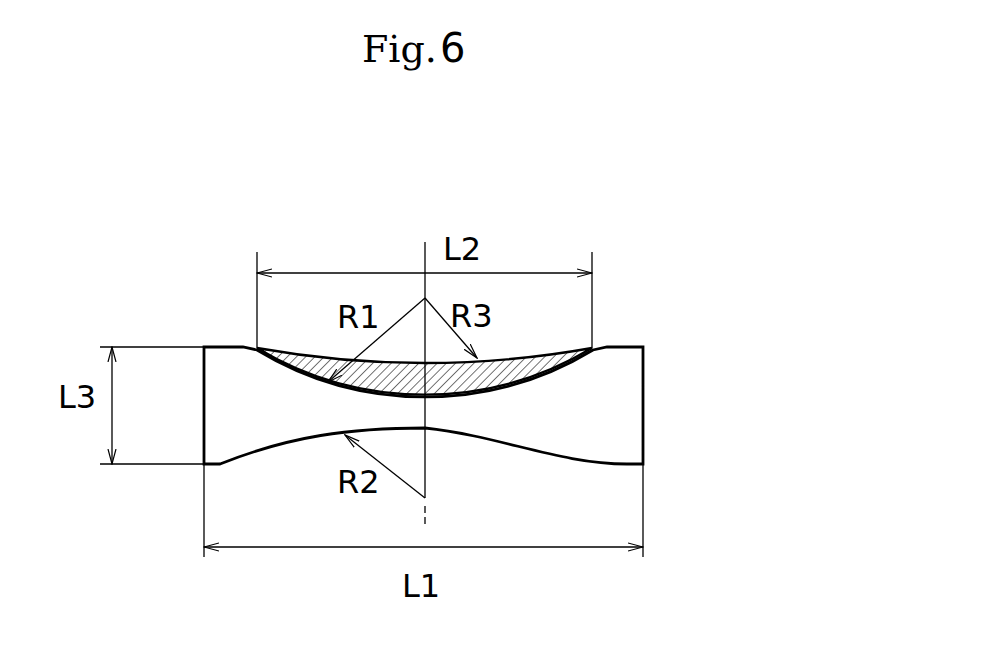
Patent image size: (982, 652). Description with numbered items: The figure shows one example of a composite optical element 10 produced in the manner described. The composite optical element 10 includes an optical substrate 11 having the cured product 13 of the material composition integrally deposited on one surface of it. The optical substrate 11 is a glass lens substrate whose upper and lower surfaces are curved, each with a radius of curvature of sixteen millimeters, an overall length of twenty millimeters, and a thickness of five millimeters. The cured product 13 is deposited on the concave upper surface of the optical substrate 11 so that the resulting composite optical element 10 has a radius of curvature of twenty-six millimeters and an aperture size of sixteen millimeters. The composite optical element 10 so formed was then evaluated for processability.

The composite optical element 10 is at (82, 216).
The optical substrate 11 is at (602, 408).
The cured product 13 is at (517, 367).